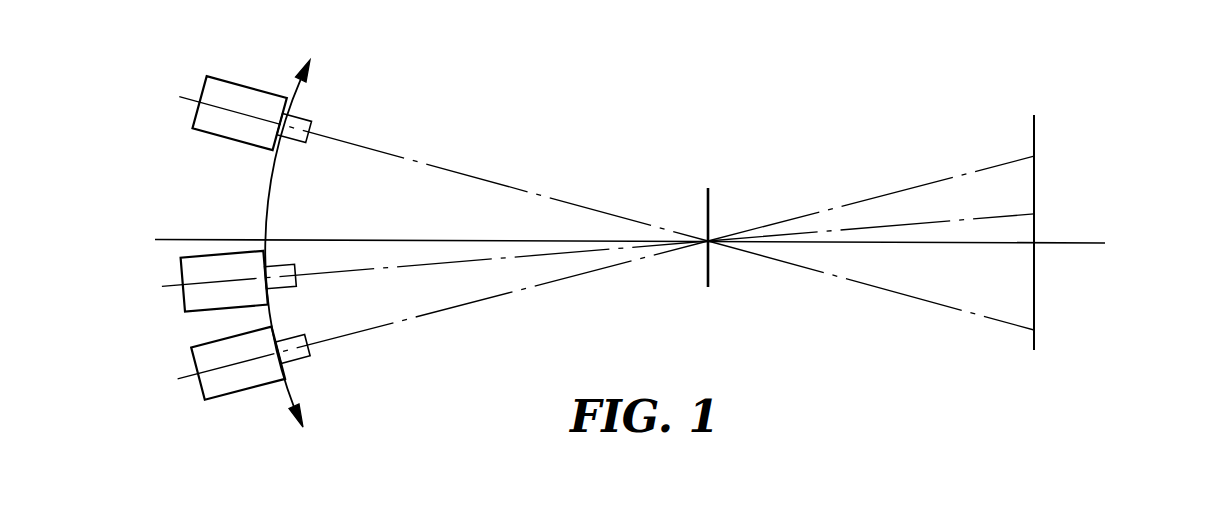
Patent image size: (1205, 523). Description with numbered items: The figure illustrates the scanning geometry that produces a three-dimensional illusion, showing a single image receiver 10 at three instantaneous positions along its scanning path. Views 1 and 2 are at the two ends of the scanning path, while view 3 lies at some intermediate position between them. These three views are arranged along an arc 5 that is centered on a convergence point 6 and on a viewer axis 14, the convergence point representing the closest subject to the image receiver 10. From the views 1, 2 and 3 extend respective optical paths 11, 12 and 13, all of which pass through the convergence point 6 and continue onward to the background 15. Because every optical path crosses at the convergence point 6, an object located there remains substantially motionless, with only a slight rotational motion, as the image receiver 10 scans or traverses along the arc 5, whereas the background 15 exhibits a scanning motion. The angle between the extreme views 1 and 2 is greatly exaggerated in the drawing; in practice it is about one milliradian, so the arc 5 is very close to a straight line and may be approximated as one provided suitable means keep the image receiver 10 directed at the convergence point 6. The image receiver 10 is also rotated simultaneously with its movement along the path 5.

The view 1 is at (315, 127).
The view 2 is at (298, 363).
The view 3 is at (294, 284).
The arc 5 is at (273, 196).
The convergence point 6 is at (711, 248).
The image receiver 10 is at (235, 89).
The optical path 11 is at (494, 186).
The optical path 12 is at (532, 296).
The optical path 13 is at (404, 263).
The viewer axis 14 is at (428, 241).
The background 15 is at (1036, 280).